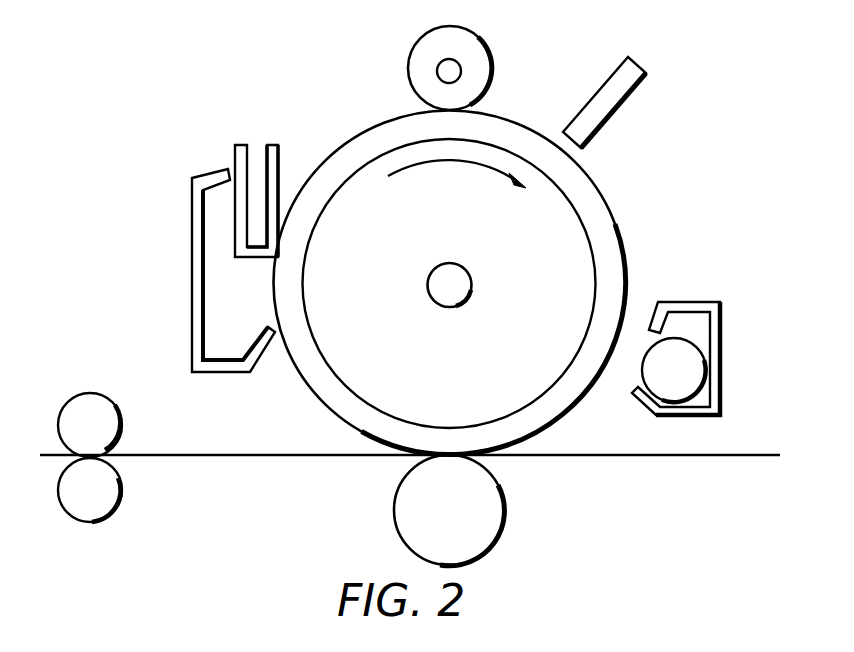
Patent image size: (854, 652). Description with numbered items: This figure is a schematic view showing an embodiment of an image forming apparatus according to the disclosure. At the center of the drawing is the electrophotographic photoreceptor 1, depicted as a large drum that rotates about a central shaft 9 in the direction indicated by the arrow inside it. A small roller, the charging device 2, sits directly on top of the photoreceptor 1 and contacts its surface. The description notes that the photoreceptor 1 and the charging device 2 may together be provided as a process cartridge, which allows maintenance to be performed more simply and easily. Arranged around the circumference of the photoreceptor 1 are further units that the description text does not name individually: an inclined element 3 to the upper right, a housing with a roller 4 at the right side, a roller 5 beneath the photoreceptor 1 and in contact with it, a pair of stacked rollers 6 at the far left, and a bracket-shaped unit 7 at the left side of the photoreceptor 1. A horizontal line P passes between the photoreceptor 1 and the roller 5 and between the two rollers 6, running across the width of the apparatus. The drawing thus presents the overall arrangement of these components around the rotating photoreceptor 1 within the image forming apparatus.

The electrophotographic photoreceptor 1 is at (623, 245).
The charging device 2 is at (490, 63).
The exposure unit 3 is at (630, 95).
The developing unit 4 is at (723, 350).
The transfer roller 5 is at (505, 510).
The feed rollers 6 is at (115, 508).
The cleaning unit 7 is at (208, 173).
The drum shaft 9 is at (452, 265).
The recording paper P is at (578, 455).